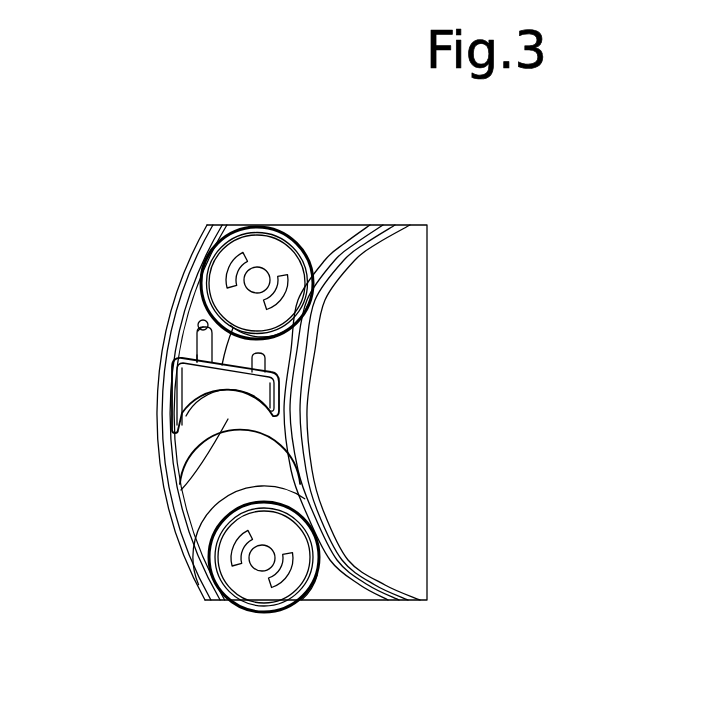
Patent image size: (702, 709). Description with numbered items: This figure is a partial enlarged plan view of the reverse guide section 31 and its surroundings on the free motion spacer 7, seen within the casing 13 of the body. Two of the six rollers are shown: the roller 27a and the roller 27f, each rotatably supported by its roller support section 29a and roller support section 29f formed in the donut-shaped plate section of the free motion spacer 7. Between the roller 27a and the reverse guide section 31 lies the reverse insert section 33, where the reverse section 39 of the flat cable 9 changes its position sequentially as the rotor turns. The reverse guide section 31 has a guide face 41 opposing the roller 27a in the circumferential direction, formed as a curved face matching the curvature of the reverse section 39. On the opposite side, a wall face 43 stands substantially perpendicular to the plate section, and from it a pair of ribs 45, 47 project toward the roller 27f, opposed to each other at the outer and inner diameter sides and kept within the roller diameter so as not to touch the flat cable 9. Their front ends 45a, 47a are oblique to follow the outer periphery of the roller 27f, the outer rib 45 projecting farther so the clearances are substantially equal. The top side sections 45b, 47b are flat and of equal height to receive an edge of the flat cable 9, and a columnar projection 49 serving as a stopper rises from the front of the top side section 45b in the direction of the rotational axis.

The free motion spacer 7 is at (321, 227).
The flat cable 9 is at (345, 563).
The casing 13 is at (188, 573).
The roller 27a is at (317, 583).
The roller 27f is at (235, 226).
The roller support section 29a is at (255, 588).
The roller support section 29f is at (263, 248).
The reverse guide section 31 is at (185, 385).
The reverse insert section 33 is at (230, 432).
The reverse section 39 is at (247, 428).
The guide face 41 is at (228, 420).
The wall face 43 is at (302, 308).
The rib 45 is at (197, 340).
The front end 45a is at (207, 315).
The top side section 45b is at (197, 356).
The rib 47 is at (276, 372).
The front end 47a is at (265, 354).
The top side section 47b is at (282, 392).
The projection 49 is at (198, 323).